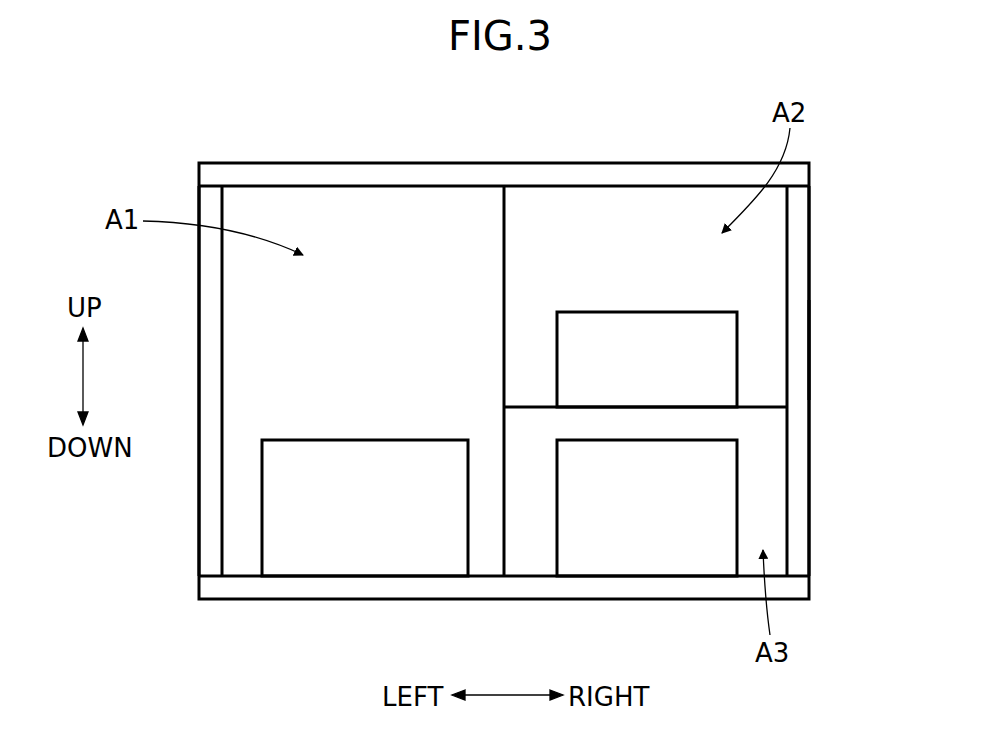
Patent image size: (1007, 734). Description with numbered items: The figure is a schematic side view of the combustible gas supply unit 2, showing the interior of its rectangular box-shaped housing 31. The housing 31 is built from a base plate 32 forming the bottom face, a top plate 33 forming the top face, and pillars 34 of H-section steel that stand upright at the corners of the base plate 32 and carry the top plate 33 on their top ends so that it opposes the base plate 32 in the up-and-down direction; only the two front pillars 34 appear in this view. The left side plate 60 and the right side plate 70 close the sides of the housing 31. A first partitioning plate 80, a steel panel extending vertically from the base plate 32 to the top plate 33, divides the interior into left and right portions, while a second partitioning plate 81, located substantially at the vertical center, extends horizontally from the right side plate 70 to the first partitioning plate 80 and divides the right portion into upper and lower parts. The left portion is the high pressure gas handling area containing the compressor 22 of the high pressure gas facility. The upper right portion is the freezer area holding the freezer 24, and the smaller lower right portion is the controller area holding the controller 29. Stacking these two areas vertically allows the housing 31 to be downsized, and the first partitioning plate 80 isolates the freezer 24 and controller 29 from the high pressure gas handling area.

The combustible gas supply unit 2 is at (852, 213).
The compressor 22 is at (285, 516).
The freezer 24 is at (712, 366).
The controller 29 is at (712, 509).
The housing 31 is at (809, 343).
The base plate 32 is at (803, 590).
The top plate 33 is at (797, 179).
The pillars 34 is at (211, 377).
The left side plate 60 is at (199, 287).
The right side plate 70 is at (809, 256).
The first partitioning plate 80 is at (503, 523).
The second partitioning plate 81 is at (759, 410).